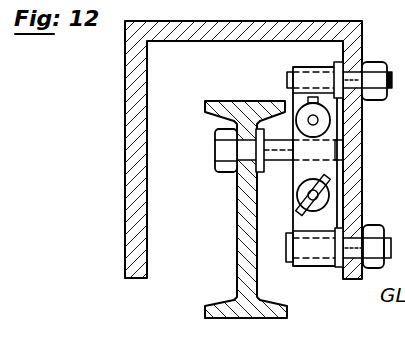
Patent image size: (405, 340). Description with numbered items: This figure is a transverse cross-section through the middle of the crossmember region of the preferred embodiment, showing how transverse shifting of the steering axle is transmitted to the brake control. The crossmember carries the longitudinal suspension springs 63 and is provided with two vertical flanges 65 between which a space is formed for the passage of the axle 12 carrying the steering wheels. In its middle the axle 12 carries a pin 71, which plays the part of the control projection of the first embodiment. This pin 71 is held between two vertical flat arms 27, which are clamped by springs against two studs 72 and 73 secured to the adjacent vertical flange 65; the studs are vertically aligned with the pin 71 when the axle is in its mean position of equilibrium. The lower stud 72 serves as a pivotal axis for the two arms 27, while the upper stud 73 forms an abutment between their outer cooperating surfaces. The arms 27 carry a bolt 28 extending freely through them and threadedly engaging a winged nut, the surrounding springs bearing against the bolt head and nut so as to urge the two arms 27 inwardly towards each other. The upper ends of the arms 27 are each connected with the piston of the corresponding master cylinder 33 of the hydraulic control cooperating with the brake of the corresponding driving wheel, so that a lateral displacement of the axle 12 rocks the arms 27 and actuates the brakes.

The axle 12 is at (235, 207).
The arms 27 is at (323, 218).
The bolt 28 is at (295, 200).
The master cylinder 33 is at (326, 118).
The longitudinal suspension springs 63 is at (204, 31).
The vertical flanges 65 is at (133, 153).
The pin 71 is at (280, 162).
The lower stud 72 is at (286, 255).
The upper stud 73 is at (288, 78).